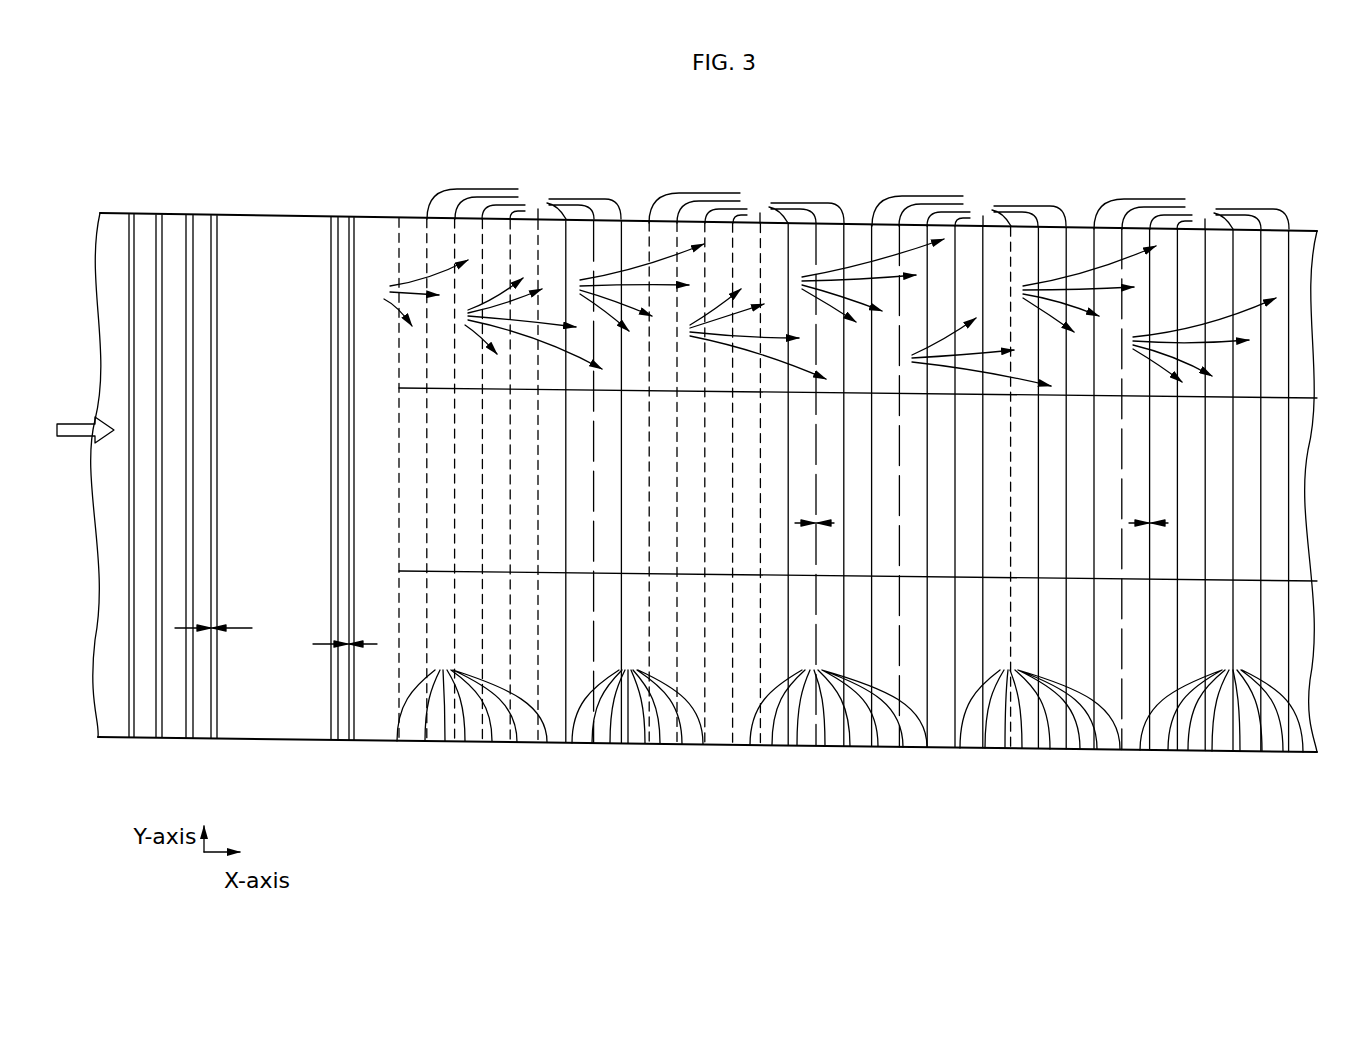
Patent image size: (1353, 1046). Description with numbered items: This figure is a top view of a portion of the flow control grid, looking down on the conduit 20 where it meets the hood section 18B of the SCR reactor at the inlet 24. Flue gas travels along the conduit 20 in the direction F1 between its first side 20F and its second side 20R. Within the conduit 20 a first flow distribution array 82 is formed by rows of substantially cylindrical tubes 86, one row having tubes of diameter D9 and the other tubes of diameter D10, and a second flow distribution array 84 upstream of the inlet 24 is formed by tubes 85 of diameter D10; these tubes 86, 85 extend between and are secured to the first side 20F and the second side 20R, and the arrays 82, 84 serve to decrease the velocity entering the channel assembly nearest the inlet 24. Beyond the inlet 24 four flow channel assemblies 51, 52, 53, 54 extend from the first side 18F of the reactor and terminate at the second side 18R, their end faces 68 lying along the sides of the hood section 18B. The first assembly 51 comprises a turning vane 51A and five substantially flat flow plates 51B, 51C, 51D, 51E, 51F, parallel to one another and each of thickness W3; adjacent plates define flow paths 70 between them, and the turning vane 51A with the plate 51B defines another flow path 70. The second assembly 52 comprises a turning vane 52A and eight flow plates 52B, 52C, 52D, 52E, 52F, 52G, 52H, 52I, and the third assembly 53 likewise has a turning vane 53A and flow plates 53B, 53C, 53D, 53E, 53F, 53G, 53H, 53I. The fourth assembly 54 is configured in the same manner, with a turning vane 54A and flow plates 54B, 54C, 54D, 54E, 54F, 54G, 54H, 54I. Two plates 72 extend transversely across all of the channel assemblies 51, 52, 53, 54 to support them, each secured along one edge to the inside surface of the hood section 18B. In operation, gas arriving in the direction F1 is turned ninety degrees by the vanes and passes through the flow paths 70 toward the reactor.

The conduit 20 is at (704, 473).
The second side of the conduit 20R is at (312, 214).
The first side of the conduit 20F is at (290, 741).
The inlet of the SCR reactor 24 is at (389, 249).
The second side of the SCR reactor 18R is at (637, 221).
The hood section 18B is at (831, 189).
The first side of the SCR reactor 18F is at (562, 742).
The flow channel assembly 51 is at (568, 172).
The flow channel assembly 52 is at (817, 172).
The flow channel assembly 53 is at (1122, 178).
The flow channel assembly 54 is at (1122, 180).
The turning vane 51A is at (543, 742).
The flow plate 51B is at (517, 742).
The flow plate 51C is at (488, 741).
The flow plate 51D is at (460, 741).
The flow plate 51E is at (437, 741).
The flow plate 51F is at (398, 741).
The turning vane 52A is at (797, 745).
The flow plate 52B is at (772, 745).
The flow plate 52C is at (745, 744).
The flow plate 52D is at (715, 744).
The flow plate 52E is at (690, 744).
The flow plate 52F is at (660, 743).
The flow plate 52G is at (632, 743).
The flow plate 52H is at (605, 743).
The flow plate 52I is at (572, 742).
The turning vane 53A is at (1050, 748).
The flow plate 53B is at (1020, 747).
The flow plate 53C is at (992, 747).
The flow plate 53D is at (965, 747).
The flow plate 53E is at (937, 746).
The flow plate 53F is at (910, 746).
The flow plate 53G is at (882, 746).
The flow plate 53H is at (855, 746).
The flow plate 53I is at (826, 745).
The turning vane 54A is at (1300, 752).
The flow plate 54B is at (1272, 751).
The flow plate 54C is at (1245, 750).
The flow plate 54D is at (1218, 750).
The flow plate 54E is at (1190, 749).
The flow plate 54F is at (1162, 749).
The flow plate 54G is at (1135, 749).
The flow plate 54H is at (1108, 748).
The flow plate 54I is at (1078, 748).
The end faces 68 is at (399, 218).
The flow paths 70 is at (818, 312).
The plates 72 is at (521, 394).
The first flow distribution array 82 is at (191, 508).
The second flow distribution array 84 is at (339, 510).
The tubes 85 is at (331, 503).
The tubes 86 is at (135, 542).
The diameter D9 is at (240, 627).
The diameter D10 is at (313, 643).
The thickness W3 is at (798, 523).
The flow direction F1 is at (70, 440).